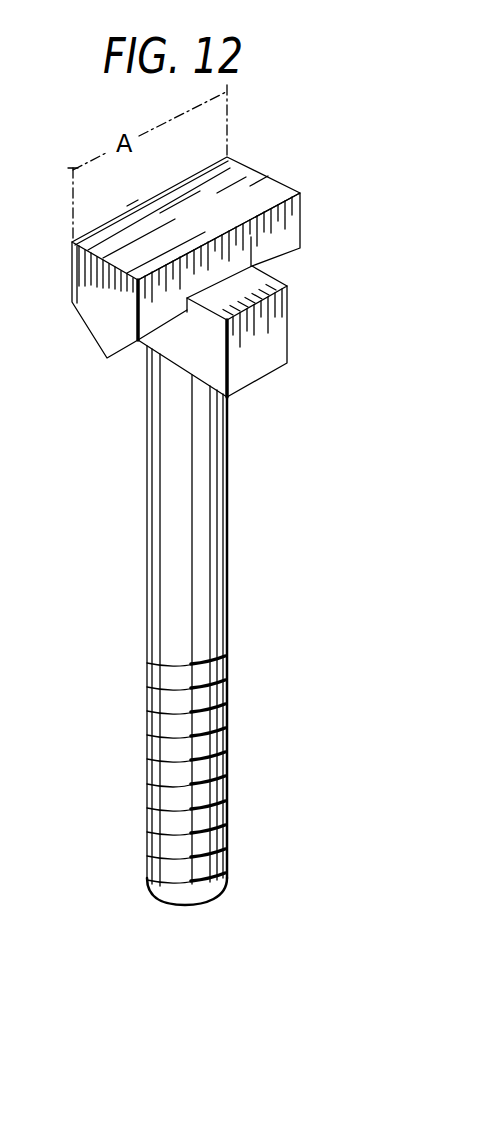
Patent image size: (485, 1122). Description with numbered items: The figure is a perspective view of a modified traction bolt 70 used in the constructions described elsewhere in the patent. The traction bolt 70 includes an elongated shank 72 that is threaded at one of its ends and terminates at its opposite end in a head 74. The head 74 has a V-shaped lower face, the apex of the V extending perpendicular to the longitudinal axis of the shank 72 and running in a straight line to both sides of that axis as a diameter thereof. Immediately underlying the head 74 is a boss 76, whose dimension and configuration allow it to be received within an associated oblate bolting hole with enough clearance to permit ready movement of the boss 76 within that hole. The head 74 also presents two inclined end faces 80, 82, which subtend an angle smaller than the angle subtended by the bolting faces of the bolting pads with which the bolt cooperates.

The traction bolt 70 is at (309, 183).
The shank 72 is at (200, 518).
The head 74 is at (295, 231).
The boss 76 is at (275, 333).
The inclined end face 80 is at (87, 330).
The inclined end face 82 is at (125, 351).